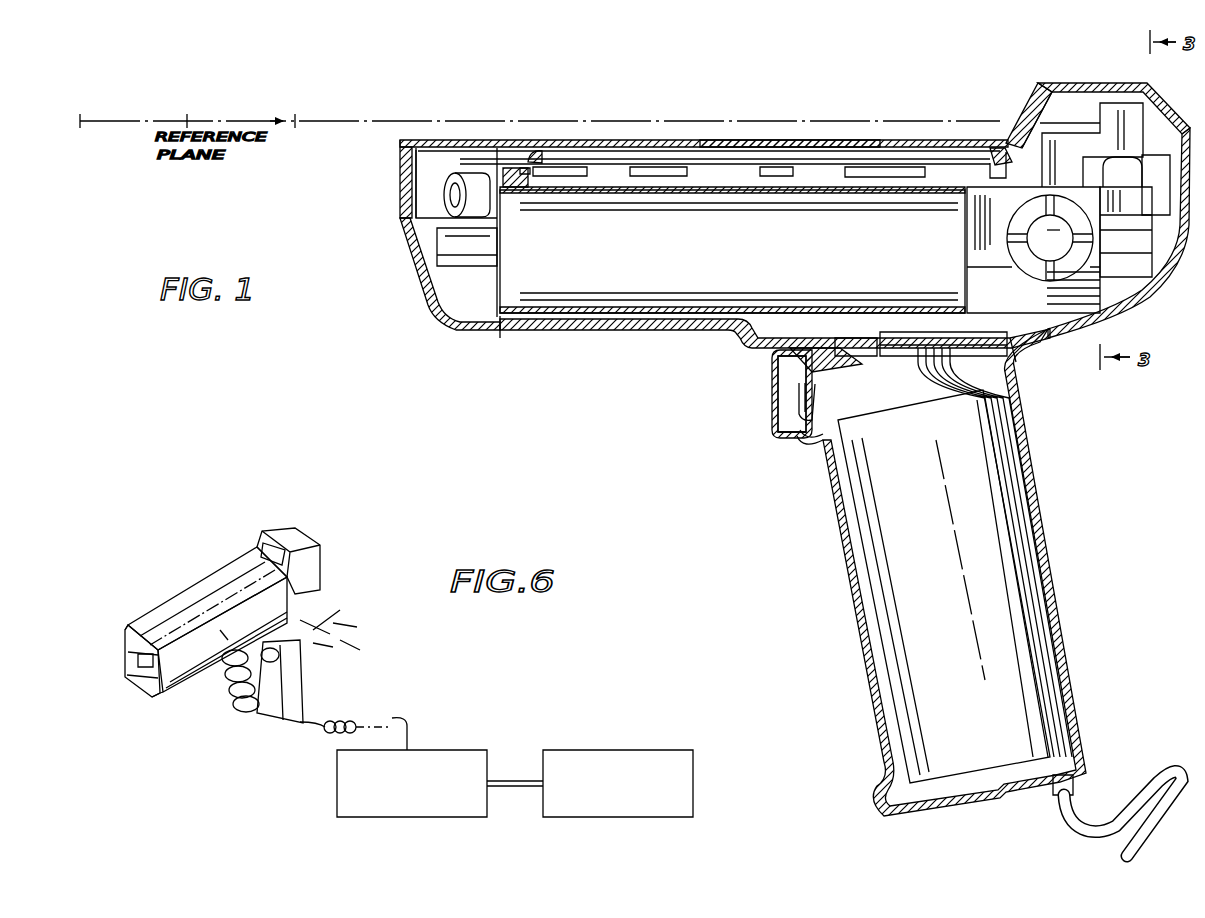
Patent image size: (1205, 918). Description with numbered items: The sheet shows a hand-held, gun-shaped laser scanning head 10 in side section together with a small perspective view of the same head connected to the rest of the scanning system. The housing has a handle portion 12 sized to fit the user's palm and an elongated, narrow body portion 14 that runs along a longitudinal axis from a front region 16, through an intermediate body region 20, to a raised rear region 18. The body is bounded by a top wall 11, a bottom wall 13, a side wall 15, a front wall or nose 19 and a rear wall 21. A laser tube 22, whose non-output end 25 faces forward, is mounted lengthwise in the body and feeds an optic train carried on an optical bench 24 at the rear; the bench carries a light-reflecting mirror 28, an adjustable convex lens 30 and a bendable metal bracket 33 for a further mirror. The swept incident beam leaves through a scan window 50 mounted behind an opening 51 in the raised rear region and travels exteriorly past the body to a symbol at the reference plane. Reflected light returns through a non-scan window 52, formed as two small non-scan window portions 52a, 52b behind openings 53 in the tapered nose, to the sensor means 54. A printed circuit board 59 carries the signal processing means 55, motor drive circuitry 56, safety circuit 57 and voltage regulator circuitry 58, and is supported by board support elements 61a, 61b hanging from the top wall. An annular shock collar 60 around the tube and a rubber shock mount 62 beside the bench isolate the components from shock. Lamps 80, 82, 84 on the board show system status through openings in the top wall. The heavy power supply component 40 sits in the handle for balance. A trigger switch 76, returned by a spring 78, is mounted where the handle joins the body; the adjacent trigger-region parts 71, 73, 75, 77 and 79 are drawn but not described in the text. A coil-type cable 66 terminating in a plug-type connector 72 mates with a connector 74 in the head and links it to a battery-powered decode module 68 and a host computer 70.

In FIG. 1, the laser scanning head 10 is at (702, 382).
In FIG. 6, the laser scanning head 10 is at (202, 519).
In FIG. 1, the top wall 11 is at (563, 140).
In FIG. 6, the top wall 11 is at (242, 552).
In FIG. 1, the handle portion 12 is at (832, 553).
In FIG. 6, the handle portion 12 is at (309, 681).
In FIG. 1, the bottom wall 13 is at (592, 334).
In FIG. 1, the body portion 14 is at (678, 336).
In FIG. 6, the body portion 14 is at (147, 611).
In FIG. 6, the side wall 15 is at (256, 630).
In FIG. 1, the front region 16 is at (392, 141).
In FIG. 6, the front region 16 is at (122, 630).
In FIG. 1, the raised rear region 18 is at (1090, 82).
In FIG. 6, the raised rear region 18 is at (289, 531).
In FIG. 1, the front wall or nose 19 is at (408, 288).
In FIG. 6, the front wall or nose 19 is at (140, 700).
In FIG. 1, the intermediate body region 20 is at (637, 140).
In FIG. 6, the intermediate body region 20 is at (180, 586).
In FIG. 1, the rear wall 21 is at (1192, 255).
In FIG. 1, the laser tube 22 is at (620, 253).
In FIG. 1, the optical bench 24 is at (1033, 250).
In FIG. 1, the non-output end 25 is at (463, 264).
In FIG. 1, the light-reflecting mirror 28 is at (1167, 295).
In FIG. 1, the positive or convex lens 30 is at (1127, 165).
In FIG. 1, the bendable metal bracket 33 is at (1091, 145).
In FIG. 1, the power supply component 40 is at (940, 568).
In FIG. 1, the scan window 50 is at (1024, 128).
In FIG. 6, the scan window 50 is at (262, 545).
In FIG. 1, the opening 51 is at (1030, 128).
In FIG. 1, the non-scan window 52 is at (426, 180).
In FIG. 6, the non-scan window portion 52a is at (123, 648).
In FIG. 6, the non-scan window portion 52b is at (162, 688).
In FIG. 1, the opening 53 is at (404, 161).
In FIG. 1, the sensor means 54 is at (444, 204).
In FIG. 1, the signal processing means 55 is at (570, 177).
In FIG. 1, the motor drive circuitry 56 is at (676, 177).
In FIG. 1, the safety circuit 57 is at (794, 176).
In FIG. 1, the voltage regulator circuitry 58 is at (901, 176).
In FIG. 1, the printed circuit board 59 is at (956, 160).
In FIG. 1, the annular shock collar 60 is at (523, 332).
In FIG. 1, the board support element 61a is at (1005, 147).
In FIG. 1, the board support element 61b is at (532, 158).
In FIG. 1, the rubber shock mount 62 is at (1030, 263).
In FIG. 1, the coil-type cable 66 is at (1179, 744).
In FIG. 6, the coil-type cable 66 is at (345, 713).
In FIG. 6, the decode module 68 is at (480, 750).
In FIG. 6, the host computer 70 is at (636, 747).
In FIG. 1, the trigger spring channel 71 is at (812, 420).
In FIG. 1, the plug-type connector 72 is at (1020, 362).
In FIG. 1, the trigger pivot 73 is at (797, 433).
In FIG. 1, the mating connector 74 is at (1027, 345).
In FIG. 1, the trigger housing 75 is at (771, 360).
In FIG. 1, the trigger switch 76 is at (770, 396).
In FIG. 6, the trigger switch 76 is at (221, 632).
In FIG. 1, the trigger wall 77 is at (778, 414).
In FIG. 1, the spring 78 is at (877, 360).
In FIG. 1, the trigger mount 79 is at (862, 358).
In FIG. 1, the lamp 80 is at (713, 157).
In FIG. 6, the lamp 80 is at (203, 604).
In FIG. 1, the lamp 82 is at (748, 157).
In FIG. 6, the lamp 82 is at (220, 597).
In FIG. 1, the lamp 84 is at (785, 157).
In FIG. 6, the lamp 84 is at (253, 599).